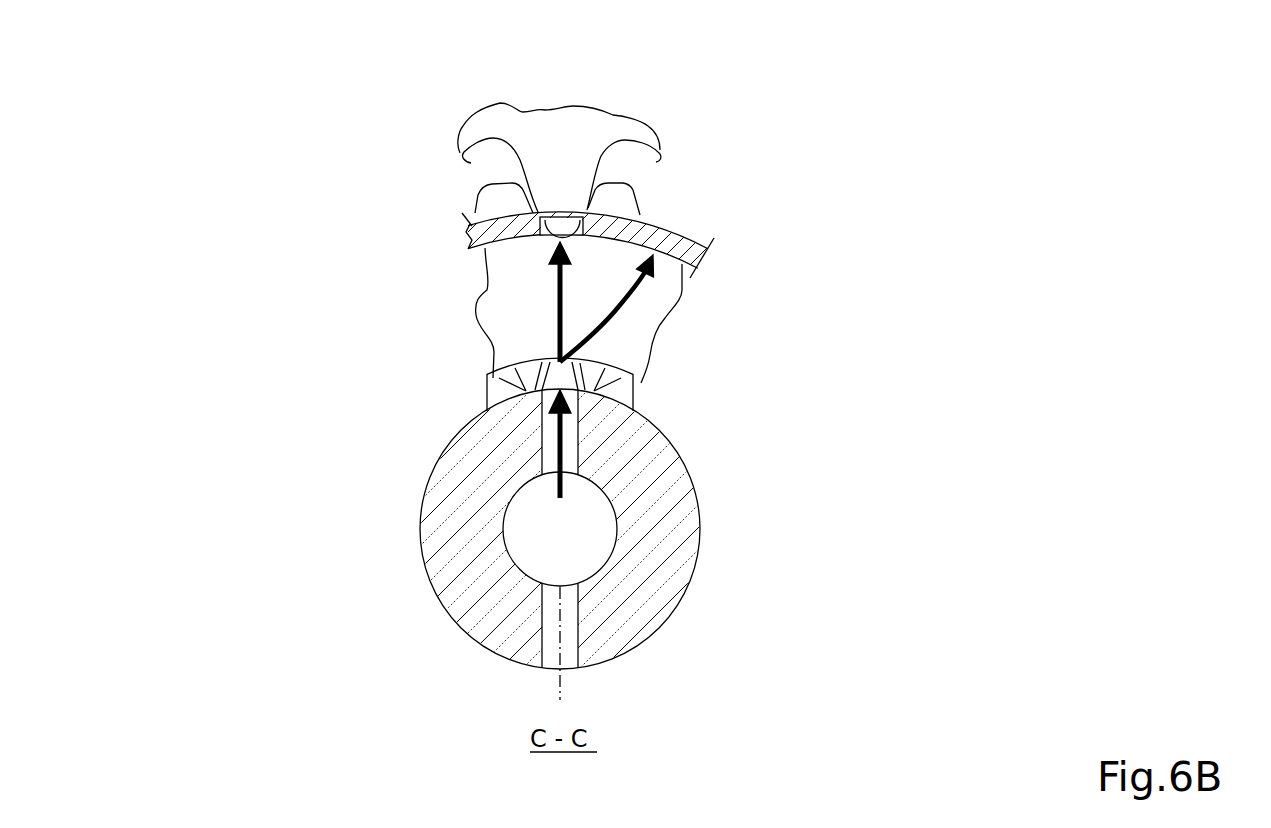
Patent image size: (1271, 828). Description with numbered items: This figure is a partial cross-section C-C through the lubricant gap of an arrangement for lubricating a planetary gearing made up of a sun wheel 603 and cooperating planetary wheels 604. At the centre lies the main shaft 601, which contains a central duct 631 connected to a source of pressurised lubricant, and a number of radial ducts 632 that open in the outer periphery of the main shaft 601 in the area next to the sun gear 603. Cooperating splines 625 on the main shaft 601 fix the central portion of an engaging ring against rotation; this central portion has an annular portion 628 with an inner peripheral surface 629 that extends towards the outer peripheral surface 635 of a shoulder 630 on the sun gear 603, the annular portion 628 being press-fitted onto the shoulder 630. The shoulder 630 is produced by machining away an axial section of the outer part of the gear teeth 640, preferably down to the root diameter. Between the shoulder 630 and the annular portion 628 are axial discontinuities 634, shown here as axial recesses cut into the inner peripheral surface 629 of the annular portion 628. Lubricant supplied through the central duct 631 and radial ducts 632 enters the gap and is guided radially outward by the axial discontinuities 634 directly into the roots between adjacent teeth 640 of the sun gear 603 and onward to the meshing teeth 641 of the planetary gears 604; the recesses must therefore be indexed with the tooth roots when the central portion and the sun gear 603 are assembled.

The main shaft 601 is at (667, 592).
The sun wheel 603 is at (653, 313).
The planetary wheels 604 is at (623, 117).
The cooperating splines 625 is at (478, 390).
The annular portion 628 is at (700, 263).
The inner peripheral surface 629 is at (548, 238).
The shoulder 630 is at (500, 228).
The central duct 631 is at (582, 548).
The radial ducts 632 is at (592, 447).
The axial discontinuities 634 is at (543, 250).
The outer peripheral surface 635 is at (590, 220).
The teeth of the sun gear 640 is at (623, 204).
The teeth of the planetary gears 641 is at (585, 163).